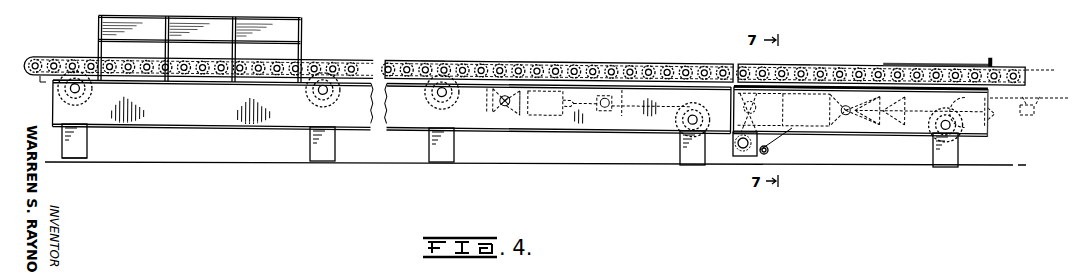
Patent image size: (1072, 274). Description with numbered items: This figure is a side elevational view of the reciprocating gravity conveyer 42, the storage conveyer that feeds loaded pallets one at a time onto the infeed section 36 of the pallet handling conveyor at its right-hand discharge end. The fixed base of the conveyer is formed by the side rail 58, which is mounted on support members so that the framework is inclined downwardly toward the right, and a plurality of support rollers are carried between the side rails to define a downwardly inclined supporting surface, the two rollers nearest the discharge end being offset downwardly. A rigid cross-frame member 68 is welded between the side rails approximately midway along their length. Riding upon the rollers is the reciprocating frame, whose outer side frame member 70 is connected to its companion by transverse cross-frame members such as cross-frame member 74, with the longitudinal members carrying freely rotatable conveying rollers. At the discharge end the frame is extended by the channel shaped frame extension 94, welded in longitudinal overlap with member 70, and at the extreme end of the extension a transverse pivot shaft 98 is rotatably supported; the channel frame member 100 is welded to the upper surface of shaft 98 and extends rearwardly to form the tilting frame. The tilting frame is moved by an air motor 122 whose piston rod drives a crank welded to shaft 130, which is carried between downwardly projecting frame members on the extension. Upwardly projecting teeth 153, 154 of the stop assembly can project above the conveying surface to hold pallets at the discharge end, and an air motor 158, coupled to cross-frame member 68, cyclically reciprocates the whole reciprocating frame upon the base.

The infeed section 36 is at (1033, 68).
The reciprocating gravity conveyor 42 is at (571, 62).
The side rail 58 is at (312, 115).
The cross-frame member 68 is at (486, 115).
The outer side frame member 70 is at (432, 60).
The cross-frame member 74 is at (42, 83).
The frame extension 94 is at (619, 112).
The pivot shaft 98 is at (987, 125).
The channel frame member 100 is at (794, 65).
The air motor 122 is at (818, 124).
The shaft 130 is at (742, 153).
The tooth 153 is at (970, 64).
The tooth 154 is at (991, 66).
The air motor 158 is at (543, 118).